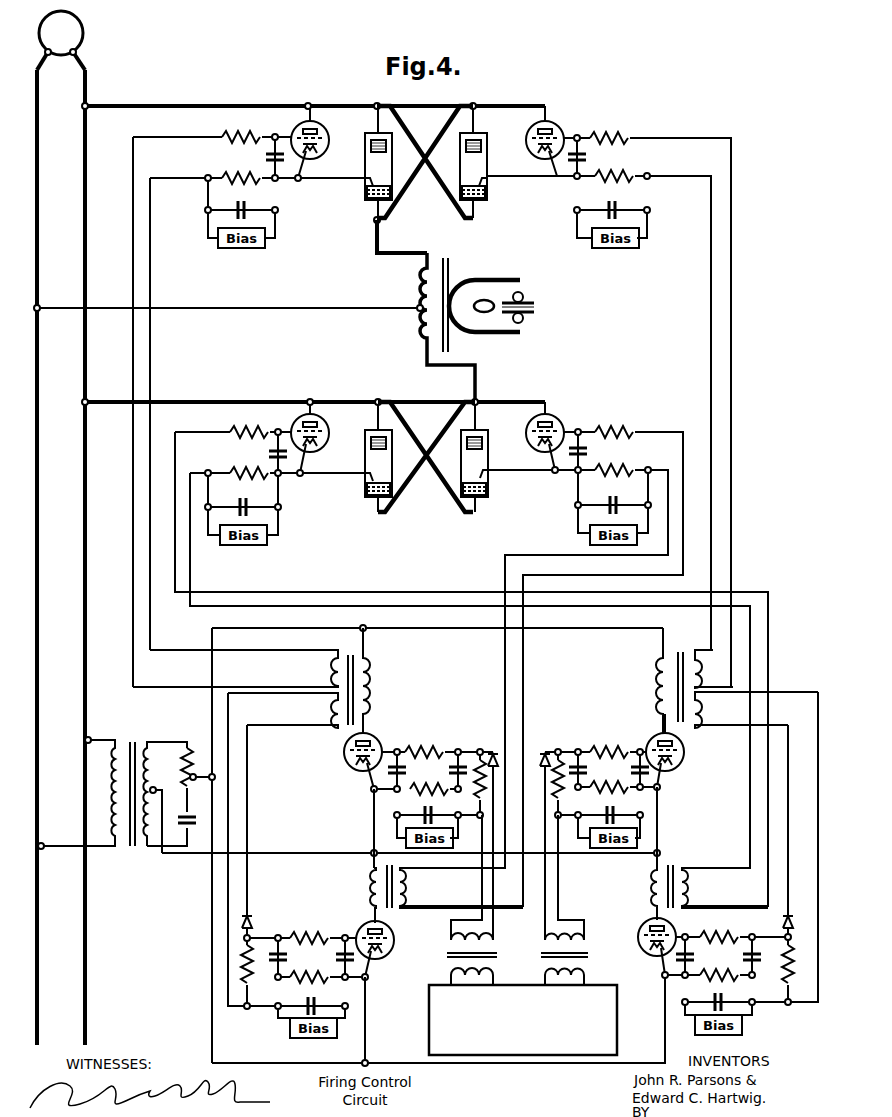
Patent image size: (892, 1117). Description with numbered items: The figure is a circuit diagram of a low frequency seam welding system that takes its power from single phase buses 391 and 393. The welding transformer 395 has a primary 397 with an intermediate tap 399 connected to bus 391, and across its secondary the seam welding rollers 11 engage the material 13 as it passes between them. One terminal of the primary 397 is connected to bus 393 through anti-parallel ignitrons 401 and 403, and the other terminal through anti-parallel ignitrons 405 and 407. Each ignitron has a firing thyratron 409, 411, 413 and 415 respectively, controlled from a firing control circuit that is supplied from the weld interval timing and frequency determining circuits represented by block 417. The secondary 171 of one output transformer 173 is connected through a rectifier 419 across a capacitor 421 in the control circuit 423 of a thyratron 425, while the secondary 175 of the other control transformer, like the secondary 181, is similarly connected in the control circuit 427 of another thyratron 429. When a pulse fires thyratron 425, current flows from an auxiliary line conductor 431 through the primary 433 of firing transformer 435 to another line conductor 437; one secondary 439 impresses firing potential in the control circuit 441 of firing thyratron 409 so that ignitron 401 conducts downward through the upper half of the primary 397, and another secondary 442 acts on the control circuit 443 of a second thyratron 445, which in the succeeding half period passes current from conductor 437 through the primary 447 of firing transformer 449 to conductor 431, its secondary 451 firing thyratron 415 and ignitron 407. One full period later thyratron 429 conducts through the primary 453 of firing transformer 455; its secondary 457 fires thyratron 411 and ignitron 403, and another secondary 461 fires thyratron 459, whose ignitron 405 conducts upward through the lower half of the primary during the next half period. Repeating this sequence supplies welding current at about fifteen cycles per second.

The seam welding rollers 11 is at (536, 323).
The material to be welded 13 is at (536, 307).
The secondary of output transformer 171 is at (478, 935).
The output transformer 173 is at (448, 970).
The secondary of the other control transformer 175 is at (586, 968).
The secondary of output transformer 181 is at (541, 942).
The single phase bus 391 is at (37, 230).
The single phase bus 393 is at (85, 230).
The welding transformer 395 is at (302, 319).
The primary 397 is at (418, 279).
The intermediate tap 399 is at (414, 310).
The ignitron 401 is at (362, 196).
The ignitron 403 is at (490, 198).
The ignitron 405 is at (363, 488).
The ignitron 407 is at (490, 490).
The firing thyratron 409 is at (339, 126).
The firing thyratron 411 is at (553, 124).
The firing thyratron 413 is at (328, 424).
The firing thyratron 415 is at (553, 418).
The block 417 is at (427, 1000).
The rectifier 419 is at (495, 749).
The capacitor 421 is at (467, 738).
The control circuit 423 is at (439, 777).
The thyratron 425 is at (377, 738).
The control circuit 427 is at (621, 777).
The thyratron 429 is at (650, 737).
The auxiliary line conductor 431 is at (385, 635).
The primary 433 is at (371, 690).
The firing transformer 435 is at (272, 680).
The line conductor 437 is at (290, 852).
The secondary 439 is at (330, 669).
The control circuit 441 is at (249, 166).
The secondary 442 is at (329, 712).
The control circuit 443 is at (324, 965).
The second thyratron 445 is at (394, 944).
The primary 447 is at (366, 888).
The firing transformer 449 is at (423, 895).
The secondary 451 is at (408, 890).
The primary 453 is at (658, 673).
The firing transformer 455 is at (715, 680).
The secondary 457 is at (714, 669).
The thyratron 459 is at (673, 927).
The secondary 461 is at (756, 710).